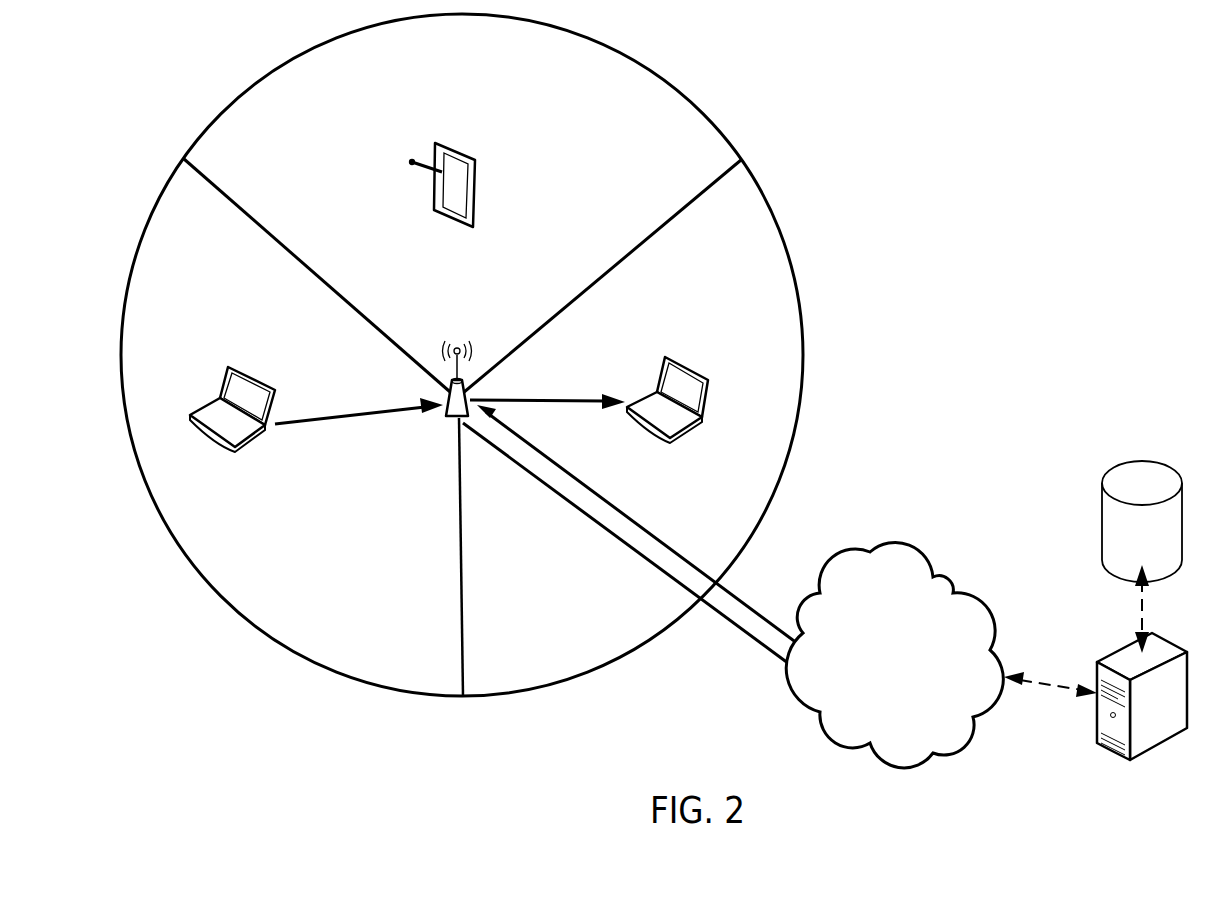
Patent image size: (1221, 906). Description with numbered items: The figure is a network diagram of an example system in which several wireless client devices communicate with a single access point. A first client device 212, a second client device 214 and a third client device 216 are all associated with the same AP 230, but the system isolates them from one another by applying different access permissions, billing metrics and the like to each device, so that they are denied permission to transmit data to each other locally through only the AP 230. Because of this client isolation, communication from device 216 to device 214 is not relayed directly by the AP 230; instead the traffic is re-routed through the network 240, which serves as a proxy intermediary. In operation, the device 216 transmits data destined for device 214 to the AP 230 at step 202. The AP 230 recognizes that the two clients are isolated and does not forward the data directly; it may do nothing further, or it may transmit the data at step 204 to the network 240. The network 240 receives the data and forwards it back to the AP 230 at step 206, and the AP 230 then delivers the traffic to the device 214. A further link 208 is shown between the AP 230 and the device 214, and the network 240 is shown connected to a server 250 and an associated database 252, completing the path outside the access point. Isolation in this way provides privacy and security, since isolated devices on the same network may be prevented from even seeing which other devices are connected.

The data transmission step 202 is at (346, 405).
The forwarding step to network 204 is at (531, 484).
The return forwarding step 206 is at (672, 537).
The downlink communication from base station to laptop 208 is at (563, 395).
The client device 212 is at (436, 160).
The second client device 214 is at (665, 355).
The third client device 216 is at (228, 363).
The AP 230 is at (448, 342).
The network 240 is at (894, 654).
The server 250 is at (1185, 727).
The database 252 is at (1142, 557).